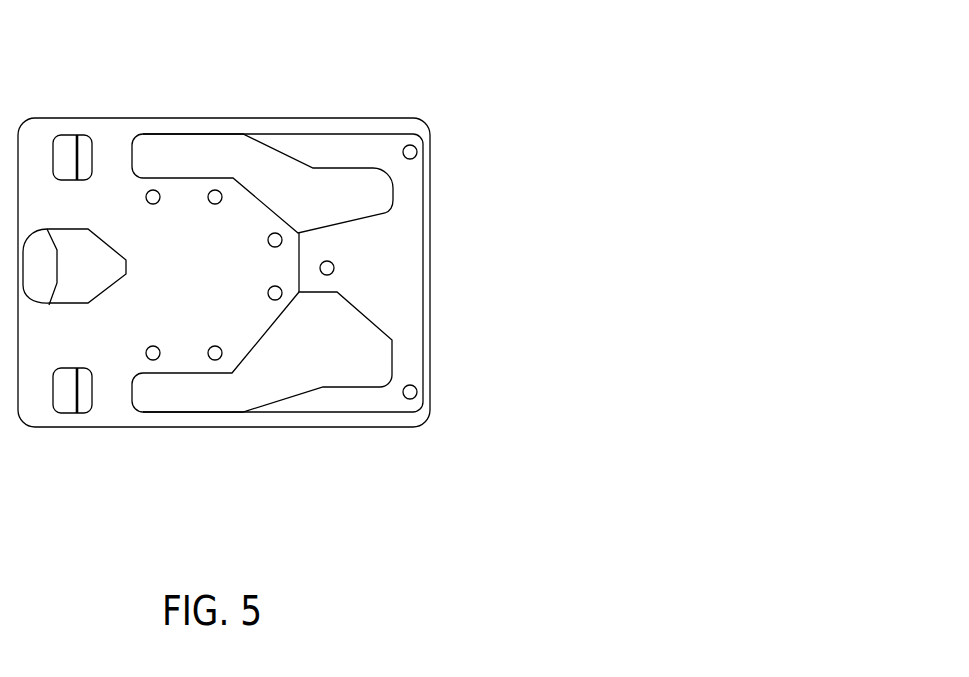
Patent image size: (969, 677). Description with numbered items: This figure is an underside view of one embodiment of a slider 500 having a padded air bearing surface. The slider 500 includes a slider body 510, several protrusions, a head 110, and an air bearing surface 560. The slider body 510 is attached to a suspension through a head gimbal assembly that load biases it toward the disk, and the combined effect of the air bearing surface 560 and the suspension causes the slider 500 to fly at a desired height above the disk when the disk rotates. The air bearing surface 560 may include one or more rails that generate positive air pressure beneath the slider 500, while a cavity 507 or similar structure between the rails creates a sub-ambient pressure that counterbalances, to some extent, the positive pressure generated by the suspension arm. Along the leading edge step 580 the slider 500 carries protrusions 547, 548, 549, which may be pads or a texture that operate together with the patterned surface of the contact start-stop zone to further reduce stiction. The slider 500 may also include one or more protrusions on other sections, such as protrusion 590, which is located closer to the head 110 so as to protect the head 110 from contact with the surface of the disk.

The slider 500 is at (137, 85).
The slider body 510 is at (357, 117).
The protrusion 547 is at (436, 141).
The protrusion 548 is at (434, 404).
The protrusion 549 is at (356, 252).
The protrusion 590 is at (298, 235).
The cavity 507 is at (374, 276).
The leading edge step 580 is at (413, 280).
The air bearing surface 560 is at (365, 359).
The head 110 is at (49, 280).